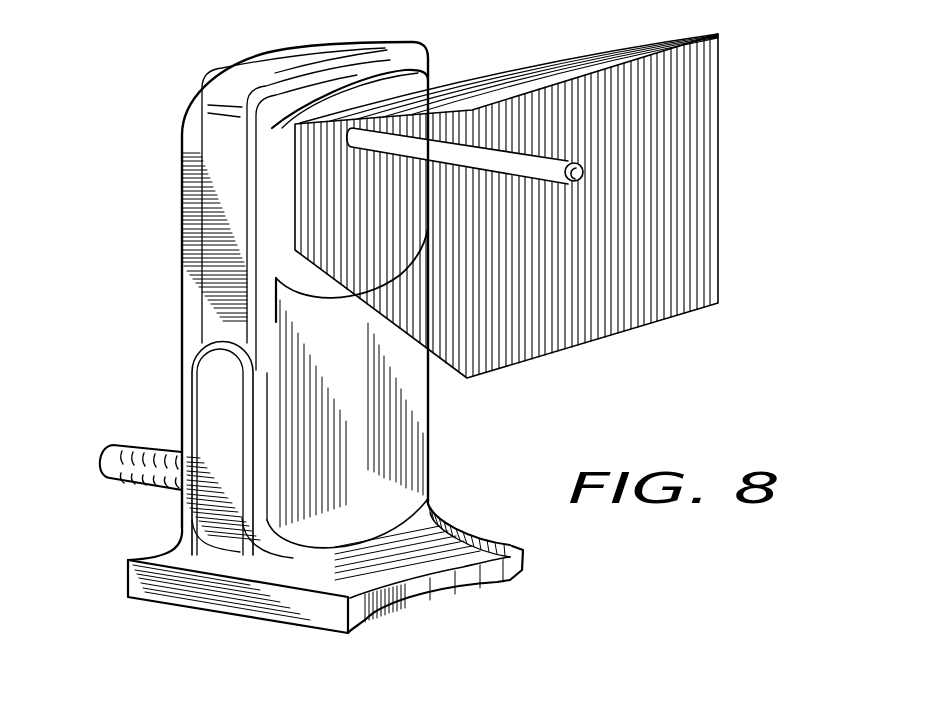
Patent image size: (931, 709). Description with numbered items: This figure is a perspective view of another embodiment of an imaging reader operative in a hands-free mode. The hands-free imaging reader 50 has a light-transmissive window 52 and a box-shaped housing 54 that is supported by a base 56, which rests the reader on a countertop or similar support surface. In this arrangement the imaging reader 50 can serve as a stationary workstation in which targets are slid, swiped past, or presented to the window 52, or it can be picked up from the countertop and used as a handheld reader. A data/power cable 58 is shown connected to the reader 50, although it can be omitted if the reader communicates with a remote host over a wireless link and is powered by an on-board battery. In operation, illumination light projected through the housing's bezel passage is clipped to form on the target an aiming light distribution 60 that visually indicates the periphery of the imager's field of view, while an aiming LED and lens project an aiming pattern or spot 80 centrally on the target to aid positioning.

The hands-free imaging reader 50 is at (155, 210).
The light-transmissive window 52 is at (310, 162).
The box-shaped housing 54 is at (222, 257).
The base 56 is at (128, 583).
The data/power cable 58 is at (150, 447).
The aiming light distribution 60 is at (690, 157).
The aiming pattern or spot 80 is at (578, 182).